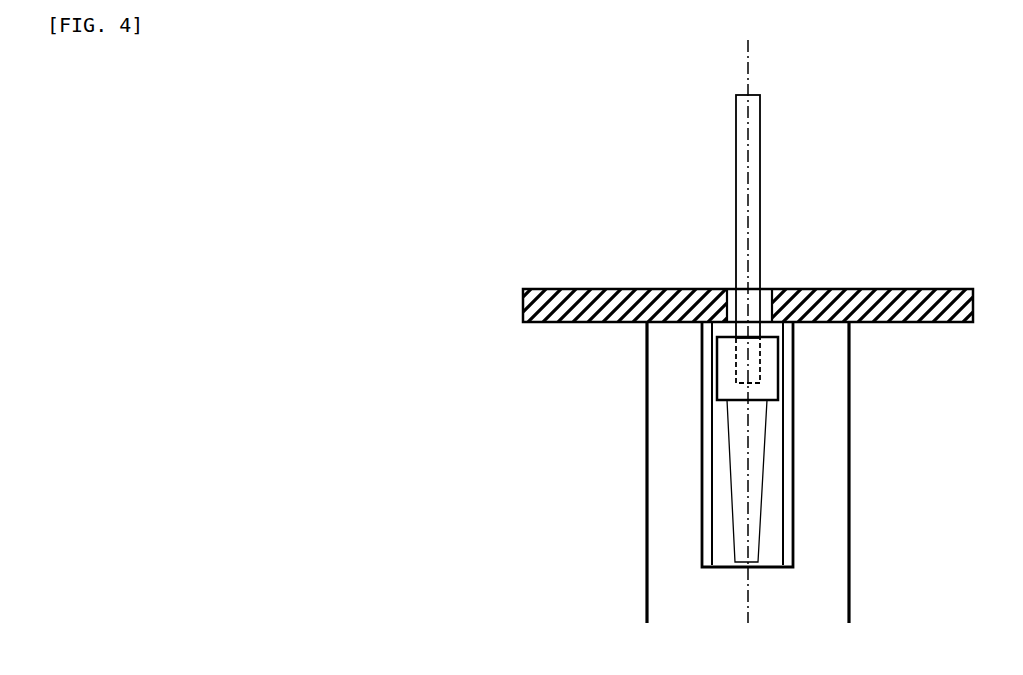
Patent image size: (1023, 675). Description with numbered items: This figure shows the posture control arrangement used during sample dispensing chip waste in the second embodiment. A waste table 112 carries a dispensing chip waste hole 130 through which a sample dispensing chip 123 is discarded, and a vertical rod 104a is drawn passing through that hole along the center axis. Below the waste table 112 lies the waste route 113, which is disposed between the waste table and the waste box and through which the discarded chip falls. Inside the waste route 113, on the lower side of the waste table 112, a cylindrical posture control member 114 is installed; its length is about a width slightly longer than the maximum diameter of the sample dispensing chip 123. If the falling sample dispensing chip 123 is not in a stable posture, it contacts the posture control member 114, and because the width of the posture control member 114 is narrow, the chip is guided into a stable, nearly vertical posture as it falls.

The rod 104a is at (737, 142).
The waste table 112 is at (898, 288).
The waste route 113 is at (645, 458).
The posture control member 114 is at (794, 427).
The sample dispensing chip 123 is at (767, 408).
The dispensing chip waste hole 130 is at (728, 288).